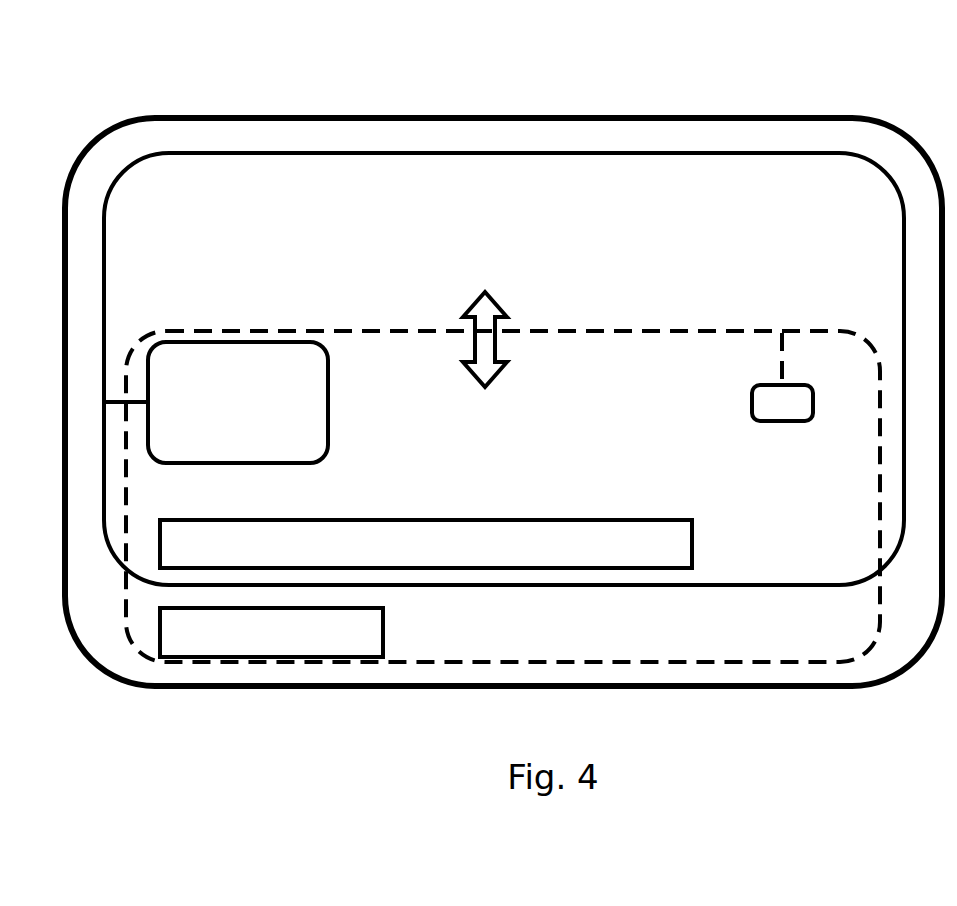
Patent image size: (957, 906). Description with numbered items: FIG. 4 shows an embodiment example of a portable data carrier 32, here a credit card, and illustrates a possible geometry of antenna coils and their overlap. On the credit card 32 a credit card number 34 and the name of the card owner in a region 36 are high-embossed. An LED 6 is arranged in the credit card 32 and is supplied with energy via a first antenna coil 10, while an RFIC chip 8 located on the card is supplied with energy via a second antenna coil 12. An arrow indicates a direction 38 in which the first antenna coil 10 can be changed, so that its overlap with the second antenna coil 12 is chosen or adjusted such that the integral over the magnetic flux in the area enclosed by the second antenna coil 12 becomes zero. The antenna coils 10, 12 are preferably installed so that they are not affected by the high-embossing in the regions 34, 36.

The portable data carrier 32 is at (503, 115).
The second antenna coil 12 is at (314, 155).
The first antenna coil 10 is at (645, 330).
The RFIC chip 8 is at (216, 402).
The LED 6 is at (782, 377).
The direction 38 is at (485, 283).
The credit card number 34 is at (695, 544).
The region of high-embossed owner name 36 is at (385, 636).